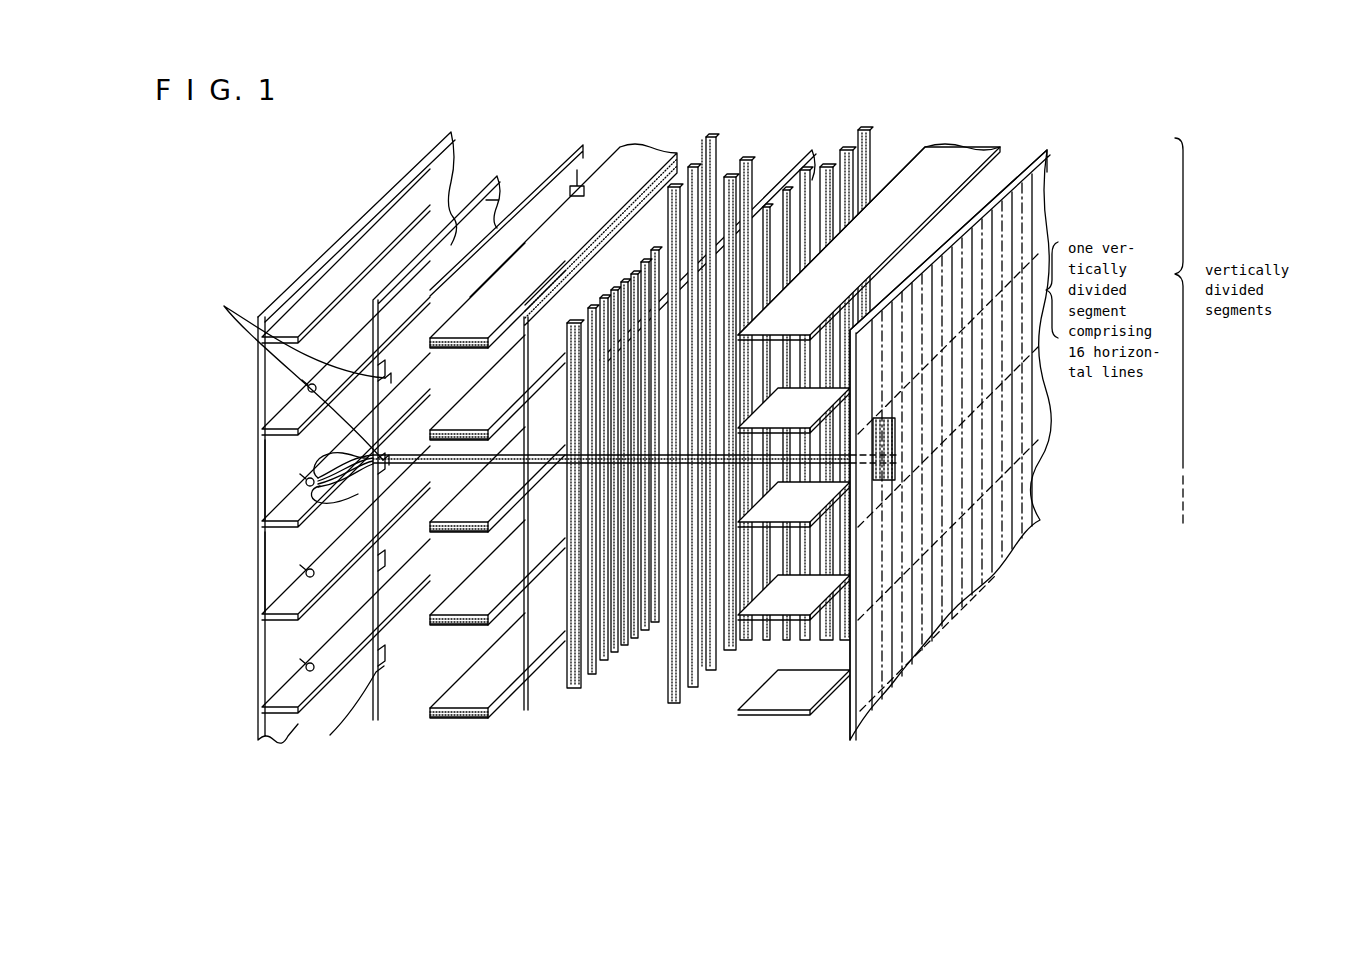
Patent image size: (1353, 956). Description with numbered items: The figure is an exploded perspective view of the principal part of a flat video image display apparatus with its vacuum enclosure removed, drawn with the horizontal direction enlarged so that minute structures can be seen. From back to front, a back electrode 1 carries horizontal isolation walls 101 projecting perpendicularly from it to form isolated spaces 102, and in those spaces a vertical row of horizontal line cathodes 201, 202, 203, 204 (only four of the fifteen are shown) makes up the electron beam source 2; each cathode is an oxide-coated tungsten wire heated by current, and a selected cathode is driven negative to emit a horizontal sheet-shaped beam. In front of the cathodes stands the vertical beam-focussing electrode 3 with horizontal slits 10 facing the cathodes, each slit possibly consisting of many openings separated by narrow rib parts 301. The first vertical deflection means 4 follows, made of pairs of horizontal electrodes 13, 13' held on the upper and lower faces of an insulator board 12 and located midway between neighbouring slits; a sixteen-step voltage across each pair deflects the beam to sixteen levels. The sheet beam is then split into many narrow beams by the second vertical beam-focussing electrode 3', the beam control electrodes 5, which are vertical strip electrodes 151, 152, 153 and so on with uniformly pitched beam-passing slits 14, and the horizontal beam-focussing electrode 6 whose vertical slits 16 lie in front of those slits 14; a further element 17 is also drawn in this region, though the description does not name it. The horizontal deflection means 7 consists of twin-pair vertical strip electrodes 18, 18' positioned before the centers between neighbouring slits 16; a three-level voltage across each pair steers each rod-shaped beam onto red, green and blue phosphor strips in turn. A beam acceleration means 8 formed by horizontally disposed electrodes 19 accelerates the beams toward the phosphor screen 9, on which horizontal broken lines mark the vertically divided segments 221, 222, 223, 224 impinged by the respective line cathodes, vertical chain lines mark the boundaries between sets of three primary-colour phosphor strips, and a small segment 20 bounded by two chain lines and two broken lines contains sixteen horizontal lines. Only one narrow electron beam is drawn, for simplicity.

The back electrode 1 is at (354, 242).
The electron beam source 2 is at (500, 200).
The vertical beam-focussing electrode 3 is at (506, 198).
The rib parts 301 is at (582, 186).
The first vertical deflection means 4 is at (643, 152).
The second vertical beam-focussing electrode 3' is at (706, 380).
The beam control electrodes 5 is at (748, 160).
The horizontal beam-focussing electrode 6 is at (812, 182).
The horizontal deflection means 7 is at (860, 142).
The beam acceleration means 8 is at (948, 153).
The phosphor screen 9 is at (1047, 160).
The horizontal slits 10 is at (523, 522).
The insulator board 12 is at (458, 626).
The vertical deflection electrode 13 is at (480, 504).
The vertical deflection electrode 13' is at (467, 556).
The beam-passing slits 14 is at (567, 660).
The vertical strip electrode 151 is at (587, 680).
The vertical strip electrode 152 is at (603, 665).
The vertical strip electrode 153 is at (614, 656).
The slits 16 is at (645, 642).
The electrode 17 is at (625, 650).
The strip electrode 18 is at (711, 463).
The strip electrode 18' is at (714, 442).
The horizontally disposed electrodes 19 is at (788, 700).
The small segment 20 is at (893, 478).
The horizontal isolation walls 101 is at (290, 417).
The isolated spaces 102 is at (290, 456).
The horizontal line cathode 201 is at (307, 388).
The horizontal line cathode 202 is at (305, 482).
The horizontal line cathode 203 is at (305, 573).
The horizontal line cathode 204 is at (305, 667).
The vertically divided segment 221 is at (1038, 200).
The vertically divided segment 222 is at (1037, 262).
The vertically divided segment 223 is at (1037, 424).
The vertically divided segment 224 is at (1037, 456).